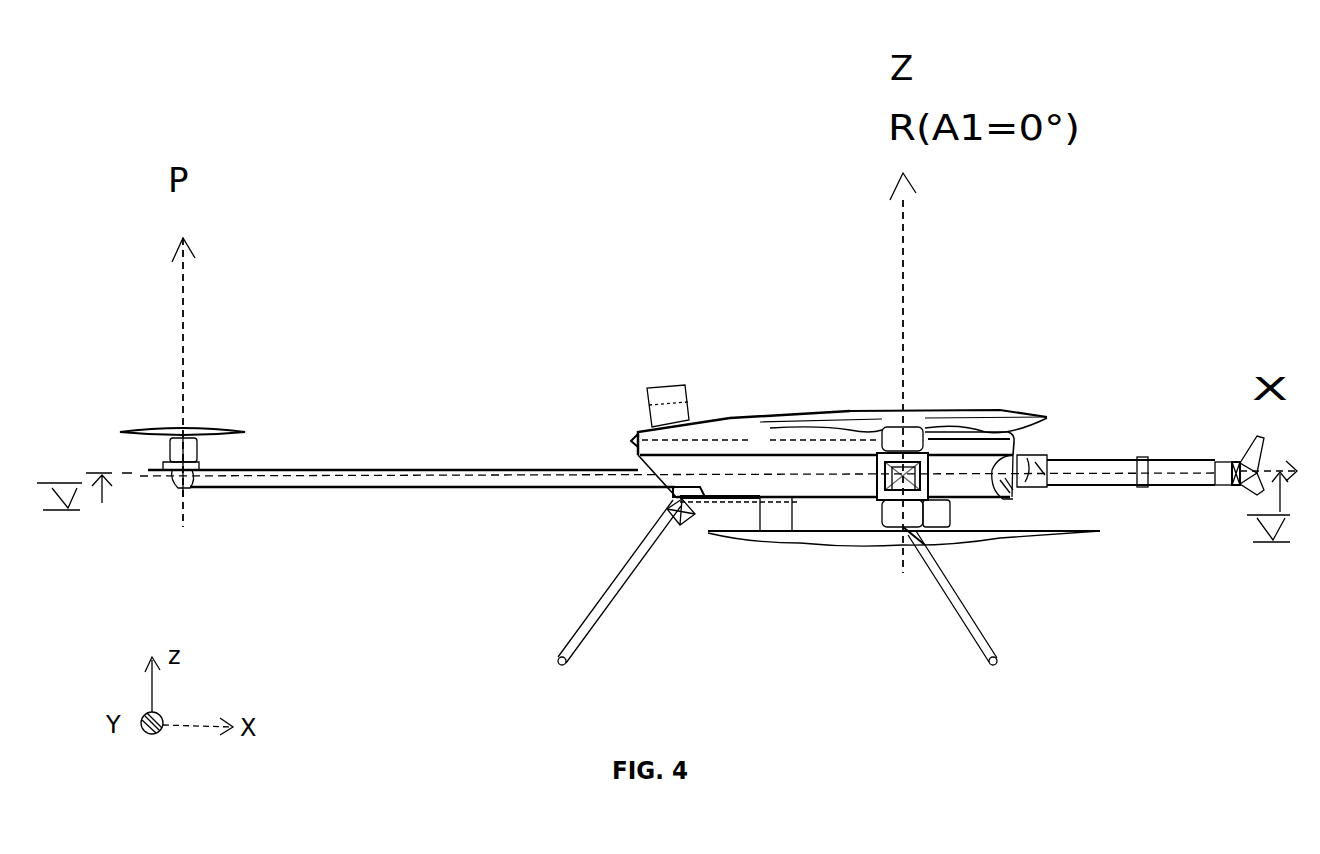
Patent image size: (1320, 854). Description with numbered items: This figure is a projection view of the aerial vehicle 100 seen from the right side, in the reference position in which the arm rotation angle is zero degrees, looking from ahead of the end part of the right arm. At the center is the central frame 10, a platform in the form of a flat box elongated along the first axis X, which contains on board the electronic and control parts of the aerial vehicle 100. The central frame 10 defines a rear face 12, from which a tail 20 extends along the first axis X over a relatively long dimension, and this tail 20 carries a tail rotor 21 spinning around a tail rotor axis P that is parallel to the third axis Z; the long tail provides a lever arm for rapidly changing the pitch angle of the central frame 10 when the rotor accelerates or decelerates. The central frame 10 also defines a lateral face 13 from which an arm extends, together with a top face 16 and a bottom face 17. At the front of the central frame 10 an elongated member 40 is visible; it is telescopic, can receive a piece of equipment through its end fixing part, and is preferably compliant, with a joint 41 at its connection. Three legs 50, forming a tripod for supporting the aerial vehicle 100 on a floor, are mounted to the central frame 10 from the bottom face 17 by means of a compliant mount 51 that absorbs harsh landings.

The aerial vehicle 100 is at (417, 792).
The central frame 10 is at (727, 430).
The rear face 12 is at (633, 443).
The lateral face 13 is at (753, 483).
The top face 16 is at (787, 403).
The bottom face 17 is at (767, 500).
The tail 20 is at (390, 488).
The tail rotor 21 is at (203, 430).
The elongated member 40 is at (1170, 480).
The boom joint 41 is at (1025, 487).
The legs 50 is at (575, 637).
The compliant mount 51 is at (667, 515).